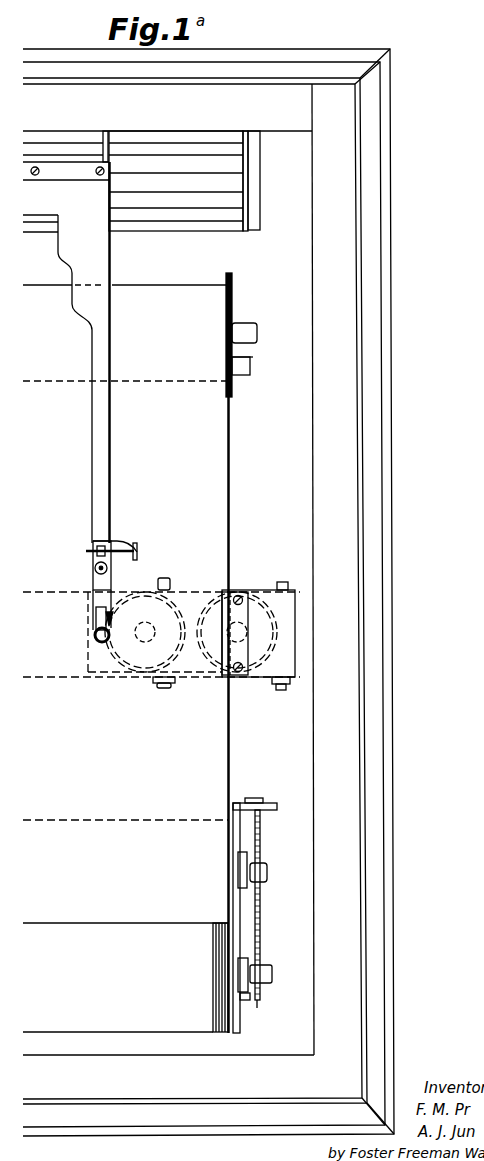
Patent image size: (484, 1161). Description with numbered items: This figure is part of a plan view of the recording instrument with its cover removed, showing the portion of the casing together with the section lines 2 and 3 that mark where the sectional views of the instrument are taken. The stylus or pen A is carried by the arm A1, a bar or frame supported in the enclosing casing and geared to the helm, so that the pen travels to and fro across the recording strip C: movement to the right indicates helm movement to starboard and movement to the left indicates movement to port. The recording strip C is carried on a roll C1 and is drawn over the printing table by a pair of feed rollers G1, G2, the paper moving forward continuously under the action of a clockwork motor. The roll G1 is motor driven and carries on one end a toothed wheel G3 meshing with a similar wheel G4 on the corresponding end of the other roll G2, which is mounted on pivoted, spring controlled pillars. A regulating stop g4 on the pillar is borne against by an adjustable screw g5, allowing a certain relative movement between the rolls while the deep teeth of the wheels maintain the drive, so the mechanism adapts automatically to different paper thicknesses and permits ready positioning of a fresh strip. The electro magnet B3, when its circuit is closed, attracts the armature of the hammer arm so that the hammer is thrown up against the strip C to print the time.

The casing frame 3 is at (318, 128).
The casing wall 2 is at (348, 631).
The stylus or pen A is at (92, 630).
The bar or frame A1 is at (111, 422).
The electro magnet B3 is at (241, 592).
The recording strip C is at (231, 746).
The roll C1 is at (252, 357).
The feed roller G1 is at (236, 912).
The feed roller G2 is at (243, 962).
The toothed wheel G3 is at (248, 856).
The toothed wheel G4 is at (246, 1000).
The regulating stop g4 is at (257, 1008).
The adjustable screw g5 is at (261, 826).